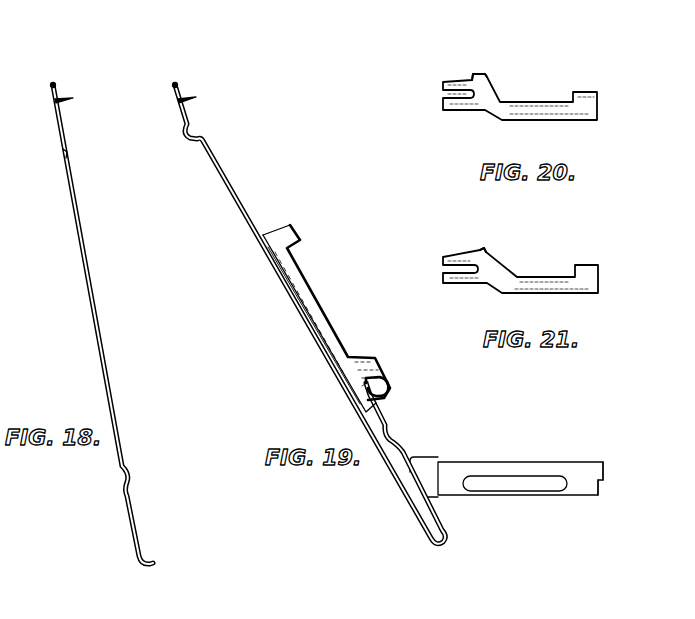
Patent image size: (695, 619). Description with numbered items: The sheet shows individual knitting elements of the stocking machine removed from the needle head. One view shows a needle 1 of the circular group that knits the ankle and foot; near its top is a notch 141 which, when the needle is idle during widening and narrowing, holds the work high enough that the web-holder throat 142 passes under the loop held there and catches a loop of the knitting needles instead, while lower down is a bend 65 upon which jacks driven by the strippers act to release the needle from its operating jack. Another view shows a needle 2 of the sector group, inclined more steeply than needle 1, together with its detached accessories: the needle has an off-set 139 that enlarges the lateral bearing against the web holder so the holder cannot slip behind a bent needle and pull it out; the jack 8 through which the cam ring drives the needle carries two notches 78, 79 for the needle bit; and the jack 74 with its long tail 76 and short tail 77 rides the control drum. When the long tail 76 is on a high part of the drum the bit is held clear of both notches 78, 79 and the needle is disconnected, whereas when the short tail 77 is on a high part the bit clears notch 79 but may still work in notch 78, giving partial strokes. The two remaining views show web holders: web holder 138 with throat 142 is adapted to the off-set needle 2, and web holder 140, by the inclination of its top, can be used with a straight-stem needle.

In FIG. 18, the needle 1 is at (96, 301).
In FIG. 18, the notch 141 is at (68, 154).
In FIG. 18, the bend 65 is at (136, 479).
In FIG. 19, the needle 2 is at (228, 178).
In FIG. 19, the off-set 139 is at (199, 129).
In FIG. 19, the jack 8 is at (308, 307).
In FIG. 19, the notch 79 is at (383, 382).
In FIG. 19, the notch 78 is at (363, 384).
In FIG. 19, the jack 74 is at (529, 466).
In FIG. 19, the long tail 76 is at (605, 473).
In FIG. 19, the short tail 77 is at (600, 490).
In FIG. 20, the web holder 138 is at (600, 102).
In FIG. 20, the throat 142 is at (475, 72).
In FIG. 21, the throat 142 is at (483, 248).
In FIG. 21, the web holder 140 is at (600, 279).